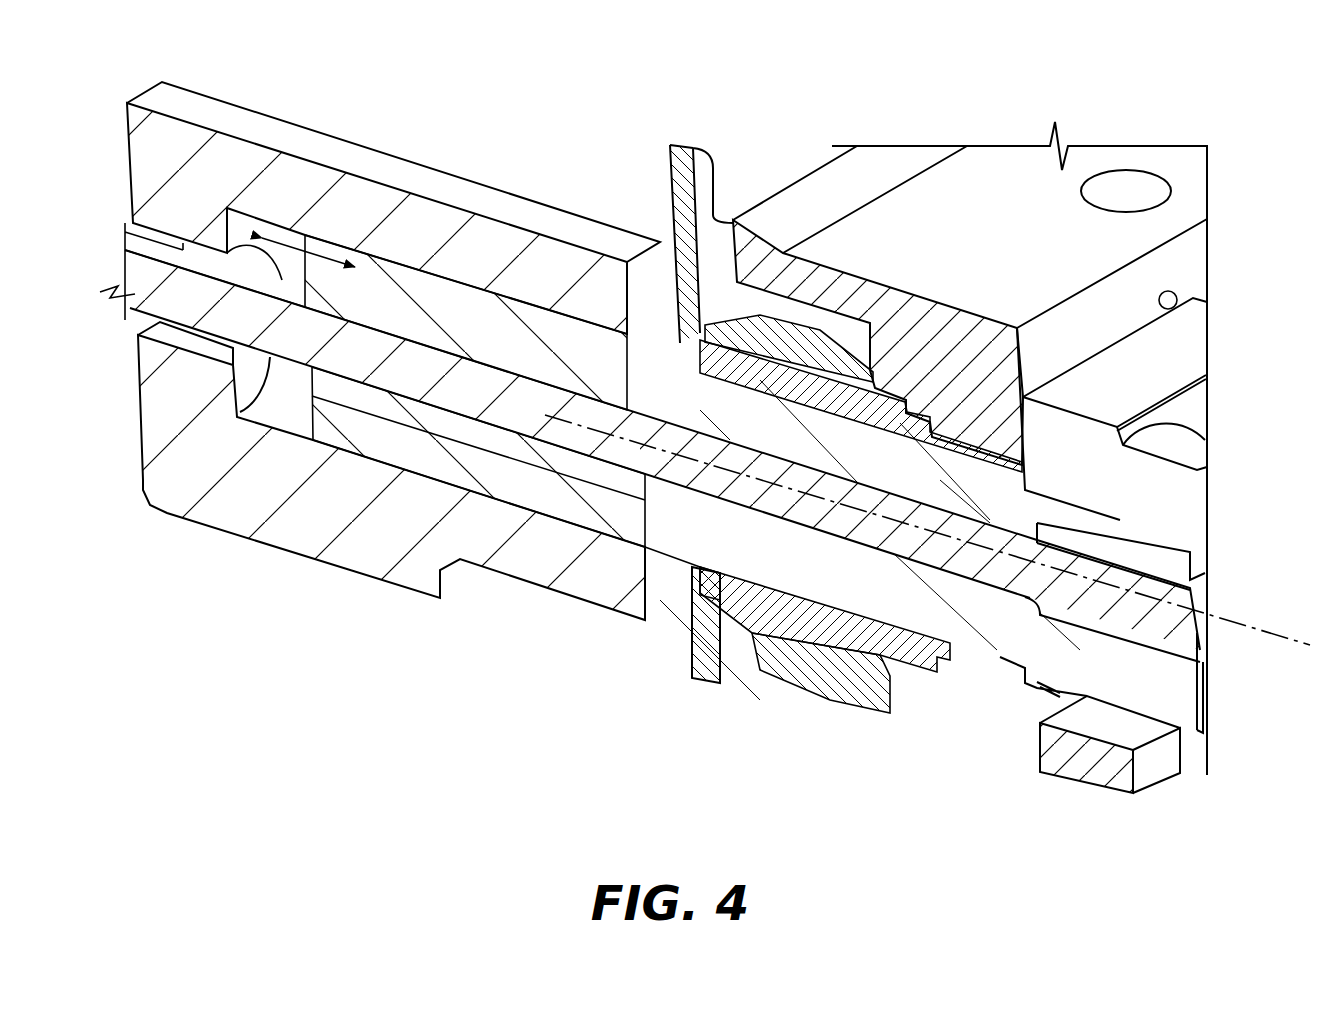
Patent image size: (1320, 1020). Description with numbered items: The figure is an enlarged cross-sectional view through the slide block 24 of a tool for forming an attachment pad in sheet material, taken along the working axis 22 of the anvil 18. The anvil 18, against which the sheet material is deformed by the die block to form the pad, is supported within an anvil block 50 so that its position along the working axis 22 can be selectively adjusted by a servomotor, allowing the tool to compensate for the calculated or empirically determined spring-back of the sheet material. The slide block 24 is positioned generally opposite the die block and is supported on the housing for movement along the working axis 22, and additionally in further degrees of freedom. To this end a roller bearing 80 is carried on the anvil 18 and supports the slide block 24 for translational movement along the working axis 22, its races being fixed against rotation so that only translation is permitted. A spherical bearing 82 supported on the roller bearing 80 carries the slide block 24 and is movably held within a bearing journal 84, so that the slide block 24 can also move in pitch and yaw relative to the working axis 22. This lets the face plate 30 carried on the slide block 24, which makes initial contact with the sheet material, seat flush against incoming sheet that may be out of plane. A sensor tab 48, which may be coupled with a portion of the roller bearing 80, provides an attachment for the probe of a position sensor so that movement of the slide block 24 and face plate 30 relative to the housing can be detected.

The anvil 18 is at (1175, 708).
The working axis 22 is at (1190, 630).
The slide block 24 is at (965, 207).
The face plate 30 is at (1185, 447).
The sensor tab 48 is at (678, 146).
The anvil block 50 is at (367, 163).
The roller bearing 80 is at (720, 583).
The spherical bearing 82 is at (853, 658).
The bearing journal 84 is at (778, 662).